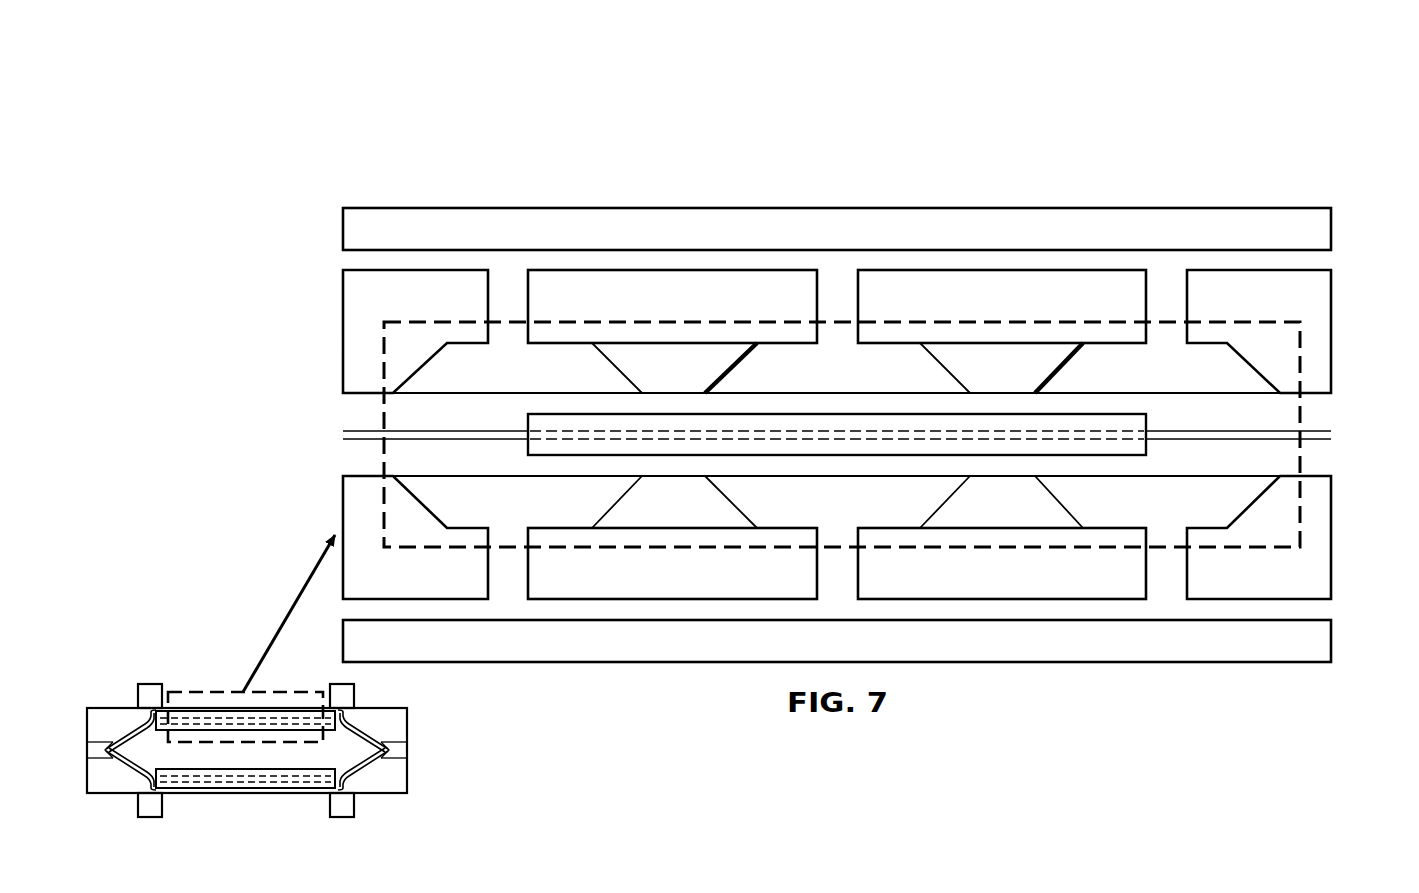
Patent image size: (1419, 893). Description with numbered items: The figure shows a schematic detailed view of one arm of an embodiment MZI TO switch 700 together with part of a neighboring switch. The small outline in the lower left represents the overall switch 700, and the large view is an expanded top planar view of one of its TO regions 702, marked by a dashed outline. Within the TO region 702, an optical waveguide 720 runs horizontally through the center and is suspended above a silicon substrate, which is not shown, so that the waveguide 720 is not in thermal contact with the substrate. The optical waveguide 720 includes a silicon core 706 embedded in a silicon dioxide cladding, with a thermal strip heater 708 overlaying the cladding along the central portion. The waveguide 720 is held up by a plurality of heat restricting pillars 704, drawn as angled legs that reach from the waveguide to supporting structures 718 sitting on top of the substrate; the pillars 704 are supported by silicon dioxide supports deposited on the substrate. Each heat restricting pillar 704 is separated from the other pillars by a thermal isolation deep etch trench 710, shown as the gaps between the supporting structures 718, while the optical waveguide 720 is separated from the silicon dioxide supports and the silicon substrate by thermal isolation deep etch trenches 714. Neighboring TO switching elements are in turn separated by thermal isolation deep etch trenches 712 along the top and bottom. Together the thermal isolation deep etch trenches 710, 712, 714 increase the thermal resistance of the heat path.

The MZI TO switch 700 is at (147, 617).
The TO region 702 is at (1022, 115).
The heat restricting pillars 704 is at (692, 379).
The silicon core 706 is at (353, 435).
The thermal strip heater 708 is at (528, 414).
The thermal isolation deep etch trench 710 is at (510, 277).
The thermal isolation deep etch trenches 712 is at (340, 259).
The thermal isolation deep etch trenches 714 is at (528, 379).
The supporting structures 718 is at (692, 306).
The optical waveguide 720 is at (353, 460).